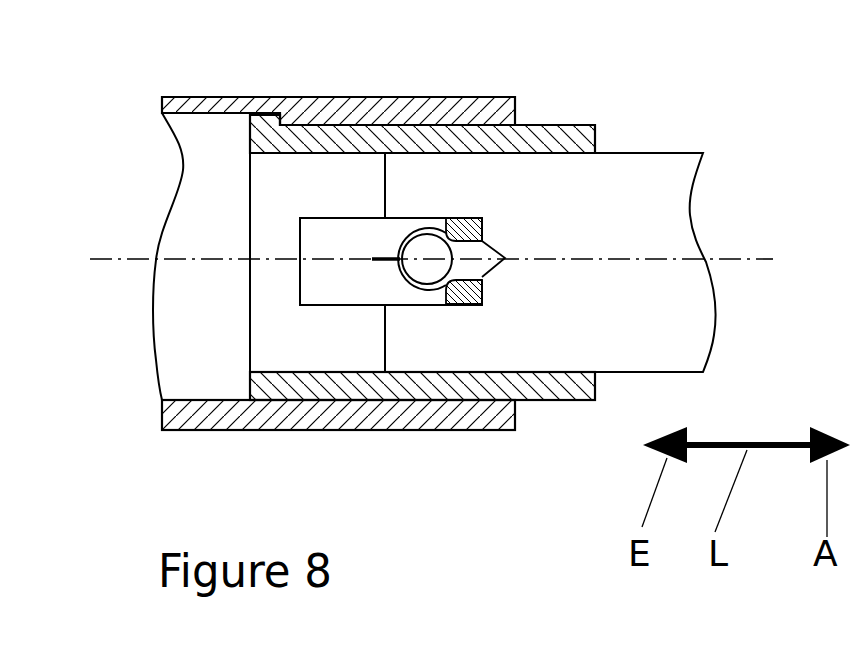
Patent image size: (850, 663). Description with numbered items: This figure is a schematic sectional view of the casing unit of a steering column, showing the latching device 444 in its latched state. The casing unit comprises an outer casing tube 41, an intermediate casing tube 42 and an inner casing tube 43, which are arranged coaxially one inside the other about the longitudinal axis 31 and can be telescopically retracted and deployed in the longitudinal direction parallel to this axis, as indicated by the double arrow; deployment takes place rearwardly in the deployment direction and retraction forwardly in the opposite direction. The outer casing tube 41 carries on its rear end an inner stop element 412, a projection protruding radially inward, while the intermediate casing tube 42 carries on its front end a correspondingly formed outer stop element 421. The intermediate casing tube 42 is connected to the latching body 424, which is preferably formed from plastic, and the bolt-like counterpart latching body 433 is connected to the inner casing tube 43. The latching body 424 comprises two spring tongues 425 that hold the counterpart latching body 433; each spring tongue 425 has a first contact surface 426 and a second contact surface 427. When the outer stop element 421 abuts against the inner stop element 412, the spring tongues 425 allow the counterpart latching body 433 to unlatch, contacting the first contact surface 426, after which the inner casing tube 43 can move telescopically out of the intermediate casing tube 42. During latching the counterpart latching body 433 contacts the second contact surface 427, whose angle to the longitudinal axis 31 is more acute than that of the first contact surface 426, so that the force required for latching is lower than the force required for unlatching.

The longitudinal axis 31 is at (762, 259).
The outer casing tube 41 is at (257, 418).
The intermediate casing tube 42 is at (452, 373).
The inner casing tube 43 is at (628, 372).
The inner stop element 412 is at (285, 118).
The outer stop element 421 is at (262, 110).
The latching body 424 is at (358, 270).
The spring tongues 425 is at (465, 290).
The first contact surface 426 is at (448, 230).
The second contact surface 427 is at (506, 259).
The counterpart latching body 433 is at (431, 267).
The latching device 444 is at (433, 193).